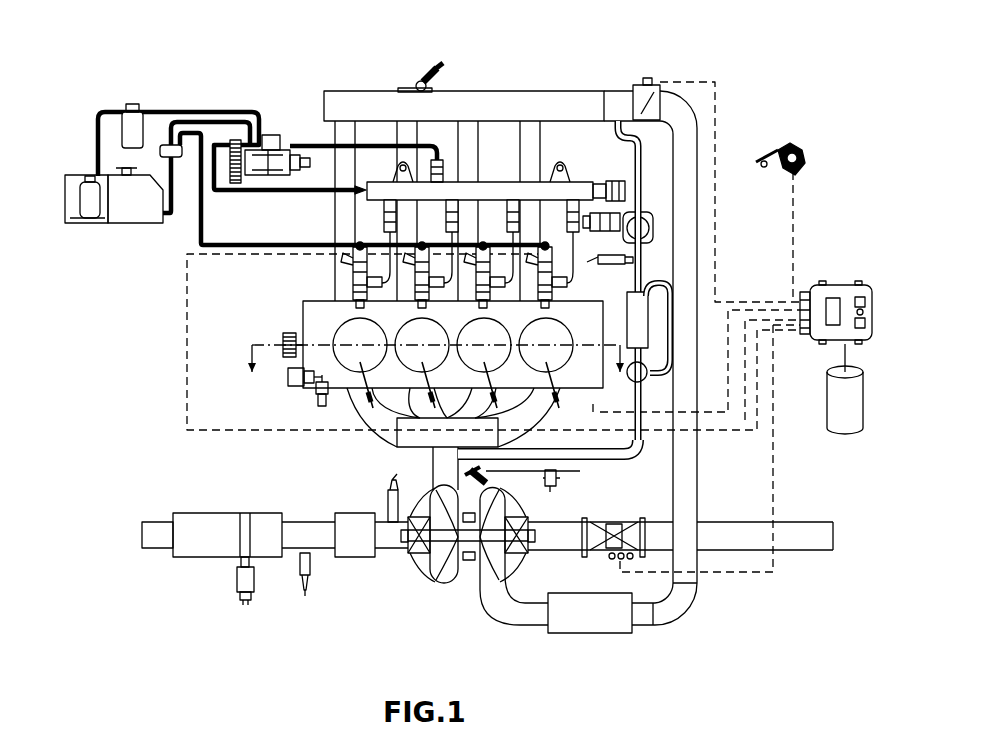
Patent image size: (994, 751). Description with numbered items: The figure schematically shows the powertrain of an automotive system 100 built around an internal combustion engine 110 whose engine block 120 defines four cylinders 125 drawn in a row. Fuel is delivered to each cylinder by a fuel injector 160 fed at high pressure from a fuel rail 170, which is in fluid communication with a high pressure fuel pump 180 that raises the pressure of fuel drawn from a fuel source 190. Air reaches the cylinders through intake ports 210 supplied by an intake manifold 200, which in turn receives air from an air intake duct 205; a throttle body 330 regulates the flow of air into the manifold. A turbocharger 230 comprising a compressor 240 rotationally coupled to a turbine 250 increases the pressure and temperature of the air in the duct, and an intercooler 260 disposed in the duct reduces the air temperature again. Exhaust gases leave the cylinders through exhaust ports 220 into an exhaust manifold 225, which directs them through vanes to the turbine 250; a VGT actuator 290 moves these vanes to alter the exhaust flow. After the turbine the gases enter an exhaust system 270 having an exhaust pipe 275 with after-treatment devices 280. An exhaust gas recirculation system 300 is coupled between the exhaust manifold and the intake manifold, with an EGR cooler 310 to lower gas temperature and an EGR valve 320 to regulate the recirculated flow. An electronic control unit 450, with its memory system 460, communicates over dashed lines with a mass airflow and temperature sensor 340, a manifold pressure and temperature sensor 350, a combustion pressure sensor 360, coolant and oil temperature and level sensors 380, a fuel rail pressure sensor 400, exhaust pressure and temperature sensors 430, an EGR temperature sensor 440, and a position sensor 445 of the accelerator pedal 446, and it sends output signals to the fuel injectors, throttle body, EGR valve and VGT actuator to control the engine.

The automotive system 100 is at (247, 80).
The internal combustion engine 110 is at (552, 84).
The engine block 120 is at (303, 304).
The cylinder 125 is at (563, 323).
The fuel injector 160 is at (355, 285).
The fuel rail 170 is at (393, 190).
The high pressure fuel pump 180 is at (282, 133).
The fuel source 190 is at (136, 210).
The intake manifold 200 is at (470, 108).
The air intake duct 205 is at (805, 520).
The intake port 210 is at (347, 302).
The exhaust port 220 is at (352, 392).
The exhaust manifold 225 is at (389, 487).
The turbocharger 230 is at (437, 597).
The compressor 240 is at (495, 560).
The turbine 250 is at (430, 557).
The intercooler 260 is at (612, 615).
The exhaust system 270 is at (215, 506).
The exhaust pipe 275 is at (152, 535).
The exhaust after-treatment device 280 is at (203, 537).
The VGT actuator 290 is at (490, 482).
The exhaust gas recirculation system 300 is at (614, 462).
The EGR cooler 310 is at (642, 336).
The EGR valve 320 is at (648, 208).
The throttle body 330 is at (650, 80).
The mass airflow and temperature sensor 340 is at (600, 558).
The manifold pressure and temperature sensor 350 is at (413, 80).
The combustion pressure sensor 360 is at (420, 440).
The coolant and oil temperature and level sensors 380 is at (318, 393).
The fuel rail pressure sensor 400 is at (623, 188).
The exhaust pressure and temperature sensors 430 is at (304, 593).
The EGR temperature sensor 440 is at (644, 250).
The position sensor 445 is at (806, 153).
The accelerator pedal 446 is at (777, 150).
The electronic control unit 450 is at (842, 283).
The memory system 460 is at (845, 415).